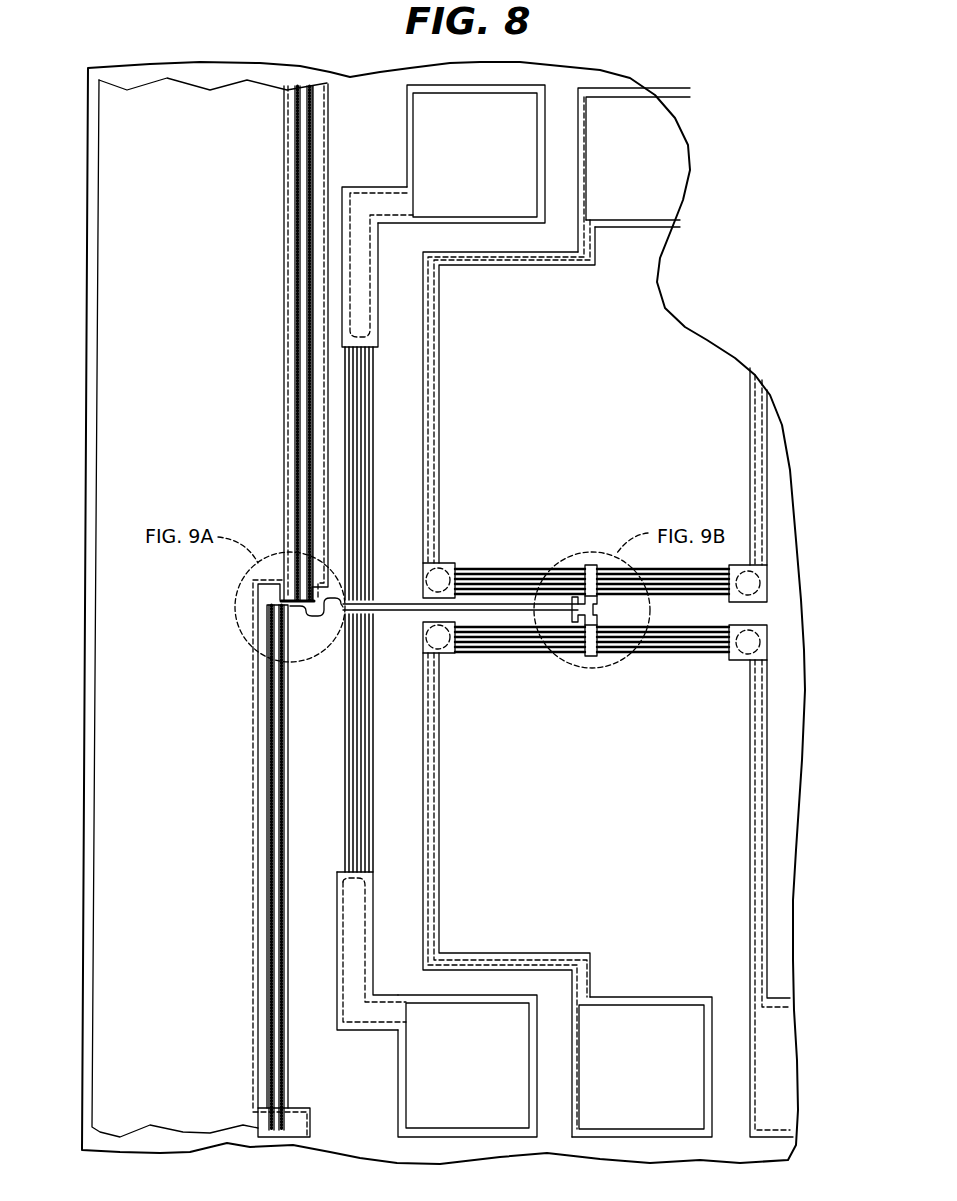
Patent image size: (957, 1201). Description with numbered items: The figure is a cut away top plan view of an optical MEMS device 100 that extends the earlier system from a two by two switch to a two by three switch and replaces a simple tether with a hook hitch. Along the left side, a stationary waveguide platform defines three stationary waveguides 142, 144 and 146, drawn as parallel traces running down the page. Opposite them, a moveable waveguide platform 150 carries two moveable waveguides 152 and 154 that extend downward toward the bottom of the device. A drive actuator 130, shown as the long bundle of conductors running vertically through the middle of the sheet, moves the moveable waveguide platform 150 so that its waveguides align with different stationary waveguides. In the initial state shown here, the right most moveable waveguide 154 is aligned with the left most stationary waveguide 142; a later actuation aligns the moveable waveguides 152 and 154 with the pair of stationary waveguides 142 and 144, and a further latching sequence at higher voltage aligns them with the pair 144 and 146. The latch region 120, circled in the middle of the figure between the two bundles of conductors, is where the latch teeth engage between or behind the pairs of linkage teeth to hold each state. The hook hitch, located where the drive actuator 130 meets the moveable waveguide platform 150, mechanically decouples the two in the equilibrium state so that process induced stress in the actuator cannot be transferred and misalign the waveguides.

The optical MEMS device 100 is at (748, 134).
The latch region 120 is at (572, 563).
The drive actuator 130 is at (417, 564).
The stationary waveguide 142 is at (284, 237).
The stationary waveguide 144 is at (294, 197).
The stationary waveguide 146 is at (312, 176).
The moveable waveguide platform 150 is at (288, 693).
The moveable waveguide 152 is at (270, 850).
The moveable waveguide 154 is at (282, 803).